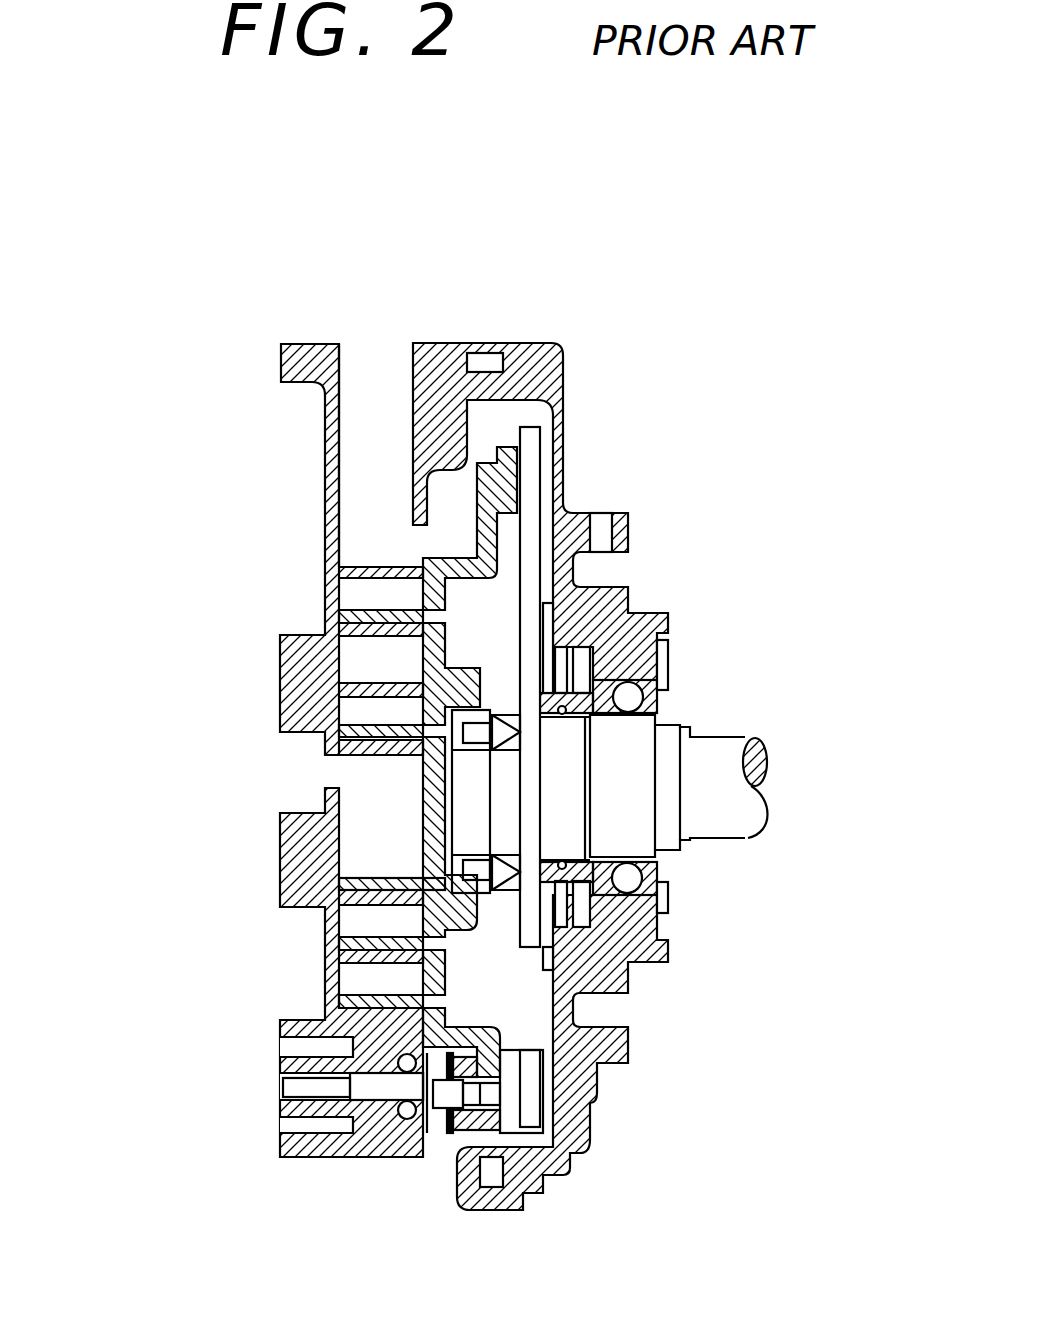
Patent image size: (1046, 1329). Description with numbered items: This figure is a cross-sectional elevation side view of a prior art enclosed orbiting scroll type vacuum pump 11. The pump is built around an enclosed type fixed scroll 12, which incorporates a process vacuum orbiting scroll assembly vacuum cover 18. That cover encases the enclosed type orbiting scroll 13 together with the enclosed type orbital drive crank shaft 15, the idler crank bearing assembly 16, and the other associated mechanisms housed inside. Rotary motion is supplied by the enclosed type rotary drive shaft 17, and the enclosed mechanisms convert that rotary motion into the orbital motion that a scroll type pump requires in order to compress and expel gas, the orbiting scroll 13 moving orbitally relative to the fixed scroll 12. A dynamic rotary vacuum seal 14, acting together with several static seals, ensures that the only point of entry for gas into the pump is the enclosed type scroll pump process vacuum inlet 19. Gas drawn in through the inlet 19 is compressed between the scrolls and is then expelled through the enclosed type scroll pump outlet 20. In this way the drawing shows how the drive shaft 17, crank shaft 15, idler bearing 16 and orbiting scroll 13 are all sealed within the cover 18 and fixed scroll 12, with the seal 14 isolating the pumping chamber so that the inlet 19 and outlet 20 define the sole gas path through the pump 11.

The enclosed orbiting scroll type vacuum pump 11 is at (282, 342).
The enclosed type fixed scroll 12 is at (360, 742).
The enclosed type orbiting scroll 13 is at (360, 675).
The dynamic rotary vacuum seal 14 is at (567, 865).
The enclosed type orbital drive crank shaft 15 is at (473, 813).
The idler crank bearing assembly 16 is at (378, 1088).
The enclosed type rotary drive shaft 17 is at (623, 772).
The process vacuum orbiting scroll assembly vacuum cover 18 is at (555, 425).
The enclosed type scroll pump process vacuum inlet 19 is at (378, 358).
The enclosed type scroll pump outlet 20 is at (295, 772).